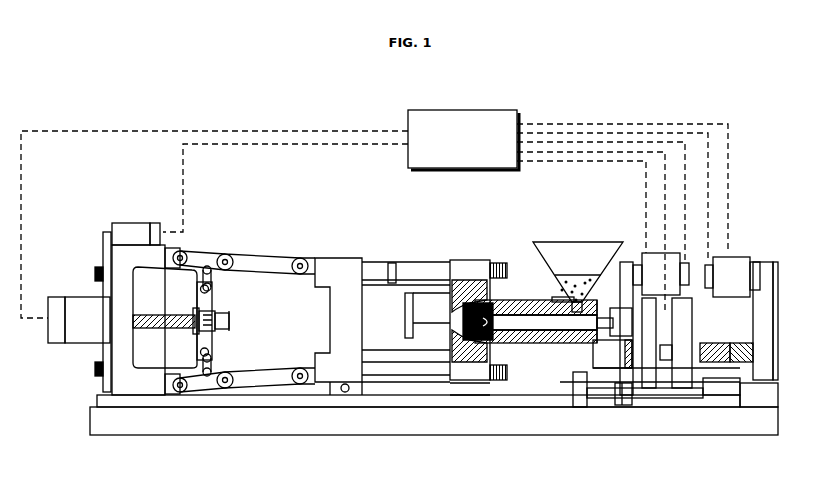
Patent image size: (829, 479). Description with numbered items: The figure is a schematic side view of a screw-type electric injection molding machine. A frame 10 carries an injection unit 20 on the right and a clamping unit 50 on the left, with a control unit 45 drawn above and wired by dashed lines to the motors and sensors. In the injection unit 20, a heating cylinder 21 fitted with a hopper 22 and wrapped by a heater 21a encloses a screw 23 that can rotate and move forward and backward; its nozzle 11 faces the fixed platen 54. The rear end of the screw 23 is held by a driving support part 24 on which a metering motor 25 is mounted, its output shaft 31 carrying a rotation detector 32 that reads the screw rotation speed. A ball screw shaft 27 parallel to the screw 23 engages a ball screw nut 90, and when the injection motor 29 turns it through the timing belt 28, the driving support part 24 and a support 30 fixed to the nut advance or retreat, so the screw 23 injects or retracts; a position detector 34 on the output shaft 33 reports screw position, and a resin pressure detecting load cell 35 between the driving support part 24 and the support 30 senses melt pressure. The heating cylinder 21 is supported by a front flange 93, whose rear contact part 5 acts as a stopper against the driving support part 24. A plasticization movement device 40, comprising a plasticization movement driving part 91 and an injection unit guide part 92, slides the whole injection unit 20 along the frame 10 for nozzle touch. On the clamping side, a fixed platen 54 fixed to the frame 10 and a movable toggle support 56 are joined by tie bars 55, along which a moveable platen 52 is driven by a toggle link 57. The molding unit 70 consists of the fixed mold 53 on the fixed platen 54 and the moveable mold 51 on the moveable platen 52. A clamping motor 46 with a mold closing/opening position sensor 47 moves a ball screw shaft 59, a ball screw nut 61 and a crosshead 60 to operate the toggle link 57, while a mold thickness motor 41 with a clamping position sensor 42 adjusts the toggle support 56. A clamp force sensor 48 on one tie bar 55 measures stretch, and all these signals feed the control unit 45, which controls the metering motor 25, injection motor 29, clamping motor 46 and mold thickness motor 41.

The contact part 5 is at (622, 405).
The frame 10 is at (168, 430).
The nozzle 11 is at (488, 343).
The injection unit 20 is at (576, 251).
The heating cylinder 21 is at (559, 300).
The heater 21a is at (548, 300).
The hopper 22 is at (580, 242).
The screw 23 is at (540, 330).
The driving support part 24 is at (648, 388).
The metering motor 25 is at (655, 253).
The ball screw shaft 27 is at (745, 360).
The timing belt 28 is at (778, 297).
The injection motor 29 is at (740, 257).
The support 30 is at (752, 341).
The output shaft 31 is at (635, 264).
The rotation detector 32 is at (687, 263).
The output shaft 33 is at (756, 262).
The position detector 34 is at (708, 290).
The resin pressure detecting load cell 35 is at (672, 320).
The plasticization movement device 40 is at (565, 393).
The mold thickness motor 41 is at (129, 224).
The clamping position sensor 42 is at (155, 224).
The control unit 45 is at (463, 110).
The clamping motor 46 is at (80, 297).
The mold closing/opening position sensor 47 is at (57, 297).
The clamp force sensor 48 is at (392, 263).
The clamping unit 50 is at (301, 236).
The moveable mold 51 is at (410, 293).
The moveable platen 52 is at (357, 258).
The fixed mold 53 is at (428, 293).
The fixed platen 54 is at (478, 262).
The tie bar 55 is at (376, 270).
The toggle support 56 is at (110, 386).
The toggle link 57 is at (209, 246).
The ball screw shaft 59 is at (160, 315).
The crosshead 60 is at (212, 350).
The ball nut 61 is at (193, 336).
The molding unit 70 is at (428, 272).
The ball screw nut 90 is at (745, 334).
The plasticization movement driving part 91 is at (760, 407).
The injection unit guide part 92 is at (703, 380).
The front flange 93 is at (603, 360).